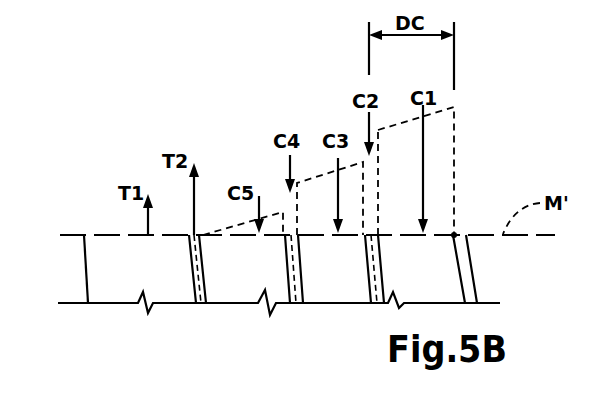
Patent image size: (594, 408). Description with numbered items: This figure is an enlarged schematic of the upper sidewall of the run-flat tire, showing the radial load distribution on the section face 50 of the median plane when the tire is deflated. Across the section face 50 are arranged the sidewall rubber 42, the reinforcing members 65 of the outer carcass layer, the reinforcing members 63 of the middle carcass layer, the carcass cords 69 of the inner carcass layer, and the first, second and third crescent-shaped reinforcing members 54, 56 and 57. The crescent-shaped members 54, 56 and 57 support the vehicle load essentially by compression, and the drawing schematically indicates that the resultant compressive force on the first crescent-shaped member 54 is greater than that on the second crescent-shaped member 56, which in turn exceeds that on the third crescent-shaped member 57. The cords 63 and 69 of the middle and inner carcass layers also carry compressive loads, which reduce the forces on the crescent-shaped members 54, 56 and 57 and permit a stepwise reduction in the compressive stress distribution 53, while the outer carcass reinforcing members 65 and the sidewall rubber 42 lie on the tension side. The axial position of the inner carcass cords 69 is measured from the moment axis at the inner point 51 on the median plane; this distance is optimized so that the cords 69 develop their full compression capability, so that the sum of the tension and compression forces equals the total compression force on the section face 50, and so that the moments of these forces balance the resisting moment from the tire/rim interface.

The sidewall rubber 42 is at (190, 259).
The reinforcing members of the outer carcass layer 65 is at (191, 276).
The reinforcing members of the middle carcass layer 63 is at (288, 287).
The carcass cords of the inner carcass layer 69 is at (367, 283).
The third crescent-shaped reinforcing member 57 is at (275, 275).
The second crescent-shaped reinforcing member 56 is at (344, 275).
The first crescent-shaped reinforcing member 54 is at (414, 271).
The compressive stress distribution 53 is at (455, 119).
The section face 50 is at (410, 224).
The inner point 51 is at (454, 234).